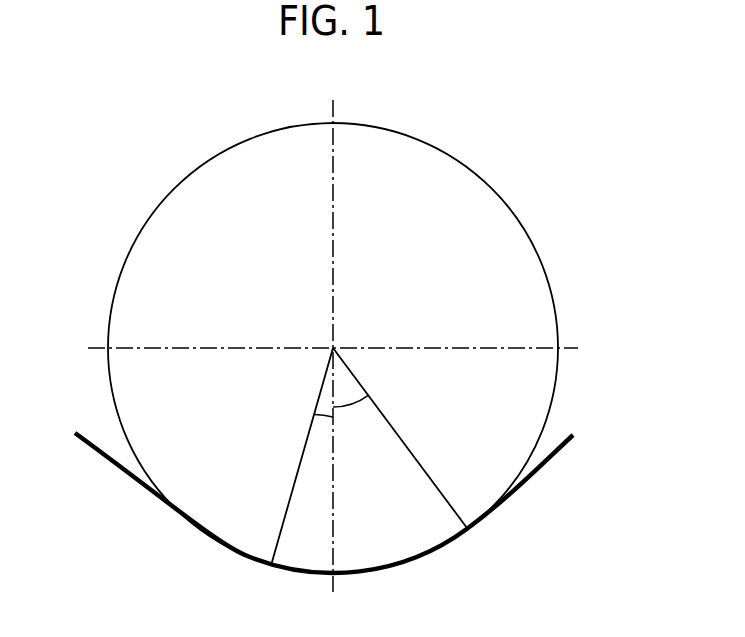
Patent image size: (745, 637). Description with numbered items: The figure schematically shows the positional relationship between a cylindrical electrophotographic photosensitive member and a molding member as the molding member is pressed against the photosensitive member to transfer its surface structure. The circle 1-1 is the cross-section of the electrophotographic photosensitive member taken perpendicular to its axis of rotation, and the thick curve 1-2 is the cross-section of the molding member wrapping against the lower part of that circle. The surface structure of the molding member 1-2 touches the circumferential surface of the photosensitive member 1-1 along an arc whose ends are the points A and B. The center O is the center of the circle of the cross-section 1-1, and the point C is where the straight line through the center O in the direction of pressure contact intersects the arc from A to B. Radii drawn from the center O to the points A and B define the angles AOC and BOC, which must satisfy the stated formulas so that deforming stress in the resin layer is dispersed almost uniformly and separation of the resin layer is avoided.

The cross-section of the electrophotographic photosensitive member 1-1 is at (435, 167).
The cross-section of the molding member 1-2 is at (154, 502).
The center O is at (333, 367).
The end point of arc AB A is at (294, 472).
The end point of arc AB B is at (410, 455).
The intersection C is at (345, 355).